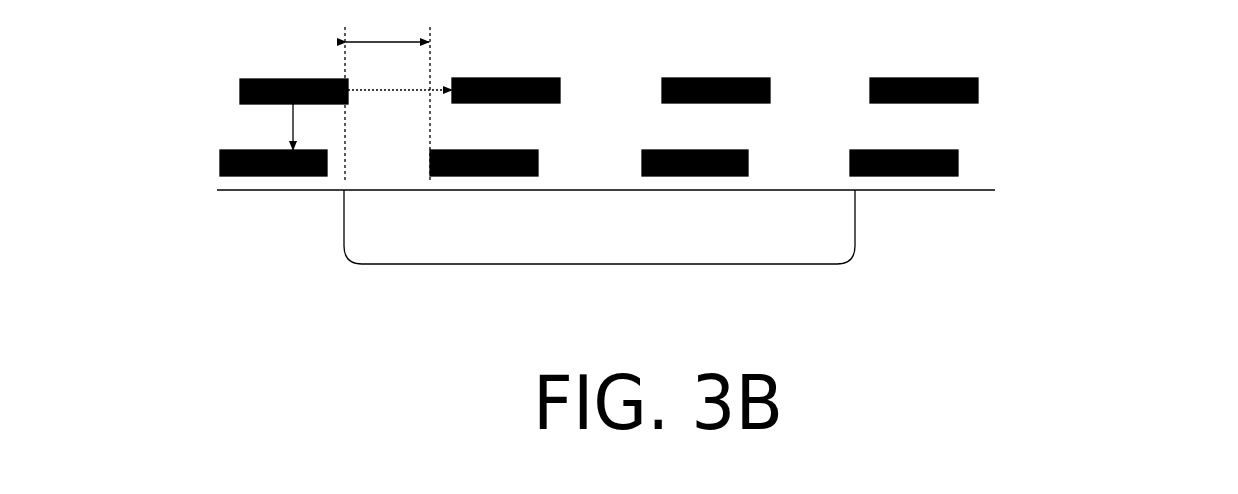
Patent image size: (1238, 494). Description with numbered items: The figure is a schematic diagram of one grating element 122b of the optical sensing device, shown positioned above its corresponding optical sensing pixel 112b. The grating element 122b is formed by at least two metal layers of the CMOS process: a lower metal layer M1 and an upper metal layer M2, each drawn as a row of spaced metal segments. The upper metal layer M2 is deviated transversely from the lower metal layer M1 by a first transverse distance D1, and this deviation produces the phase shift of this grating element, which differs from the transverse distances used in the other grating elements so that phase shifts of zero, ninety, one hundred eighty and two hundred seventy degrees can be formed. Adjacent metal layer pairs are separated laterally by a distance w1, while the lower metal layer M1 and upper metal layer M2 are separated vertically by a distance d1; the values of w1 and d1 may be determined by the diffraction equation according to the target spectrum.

The lower metal layer M1 is at (220, 160).
The upper metal layer M2 is at (240, 82).
The first transverse distance D1 is at (387, 93).
The distance between metal layers M1/M2 and M1/M2 w1 is at (400, 73).
The distance between metal layers M1 and M2 d1 is at (275, 127).
The grating element 122b is at (1032, 124).
The optical sensing pixel 112b is at (820, 247).